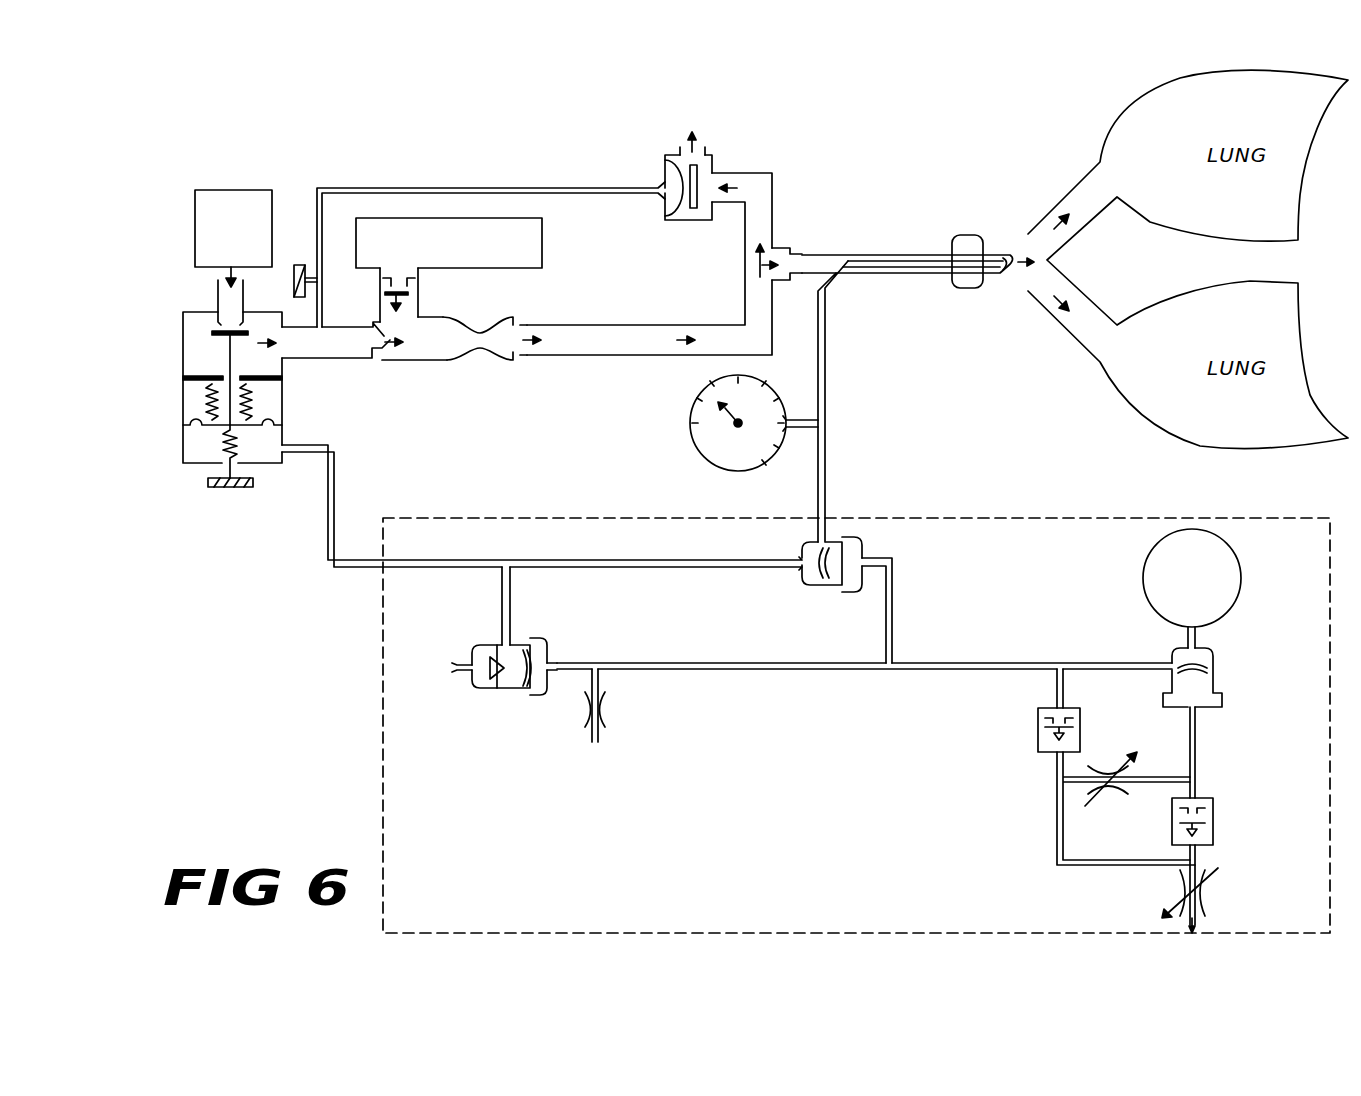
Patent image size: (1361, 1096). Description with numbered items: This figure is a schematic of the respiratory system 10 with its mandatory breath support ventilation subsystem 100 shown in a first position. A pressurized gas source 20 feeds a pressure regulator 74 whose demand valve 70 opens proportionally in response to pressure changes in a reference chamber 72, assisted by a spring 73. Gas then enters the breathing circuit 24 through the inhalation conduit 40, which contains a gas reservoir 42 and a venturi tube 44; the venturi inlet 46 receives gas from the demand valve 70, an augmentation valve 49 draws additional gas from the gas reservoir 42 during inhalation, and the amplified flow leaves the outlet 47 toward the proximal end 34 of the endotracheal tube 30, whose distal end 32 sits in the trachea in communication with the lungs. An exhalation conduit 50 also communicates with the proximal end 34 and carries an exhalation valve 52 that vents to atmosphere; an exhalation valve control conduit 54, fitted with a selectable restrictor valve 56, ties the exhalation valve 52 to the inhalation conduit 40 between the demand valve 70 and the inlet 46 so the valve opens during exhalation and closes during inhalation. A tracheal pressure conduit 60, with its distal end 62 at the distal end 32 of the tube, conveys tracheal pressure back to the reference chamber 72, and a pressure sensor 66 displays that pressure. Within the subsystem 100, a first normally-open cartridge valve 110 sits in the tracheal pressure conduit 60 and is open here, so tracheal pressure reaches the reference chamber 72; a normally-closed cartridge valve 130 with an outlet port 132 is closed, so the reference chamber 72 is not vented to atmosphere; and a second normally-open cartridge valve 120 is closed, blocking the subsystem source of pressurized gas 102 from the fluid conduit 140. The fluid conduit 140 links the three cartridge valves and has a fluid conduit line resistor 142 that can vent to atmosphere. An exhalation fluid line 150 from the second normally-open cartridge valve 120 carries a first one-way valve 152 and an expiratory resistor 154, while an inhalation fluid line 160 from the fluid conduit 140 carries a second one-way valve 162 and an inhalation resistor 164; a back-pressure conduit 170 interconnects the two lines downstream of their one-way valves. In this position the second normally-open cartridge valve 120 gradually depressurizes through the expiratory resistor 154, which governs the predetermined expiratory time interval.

The respiratory system 10 is at (932, 425).
The pressurized gas source 20 is at (221, 238).
The breathing circuit 24 is at (640, 325).
The endotracheal tube 30 is at (890, 255).
The distal end 32 is at (1000, 256).
The proximal end 34 is at (796, 252).
The inhalation conduit 40 is at (622, 357).
The gas reservoir 42 is at (478, 266).
The venturi tube 44 is at (426, 360).
The inlet 46 is at (372, 350).
The outlet 47 is at (520, 352).
The augmentation valve 49 is at (420, 288).
The exhalation conduit 50 is at (775, 173).
The exhalation valve 52 is at (712, 150).
The exhalation valve control conduit 54 is at (470, 188).
The selectable restrictor valve 56 is at (300, 265).
The tracheal pressure conduit 60 is at (640, 560).
The distal end of tracheal pressure conduit 62 is at (998, 276).
The pressure sensor 66 is at (700, 455).
The demand valve 70 is at (228, 362).
The reference chamber 72 is at (202, 440).
The spring 73 is at (266, 396).
The pressure regulator 74 is at (182, 463).
The mandatory breath support ventilation subsystem 100 is at (1175, 512).
The mandatory breath ventilation subsystem source of pressurized gas 102 is at (1178, 599).
The first normally-open cartridge valve 110 is at (866, 548).
The second normally-open cartridge valve 120 is at (1223, 690).
The normally-closed cartridge valve 130 is at (510, 690).
The outlet port 132 is at (455, 673).
The fluid conduit 140 is at (781, 670).
The fluid conduit line resistor 142 is at (606, 715).
The exhalation fluid line 150 is at (1198, 745).
The first one-way valve 152 is at (1215, 815).
The expiratory resistor 154 is at (1205, 895).
The inhalation fluid line 160 is at (1057, 683).
The second one-way valve 162 is at (1038, 735).
The inhalation resistor 164 is at (1108, 790).
The back-pressure conduit 170 is at (1057, 847).